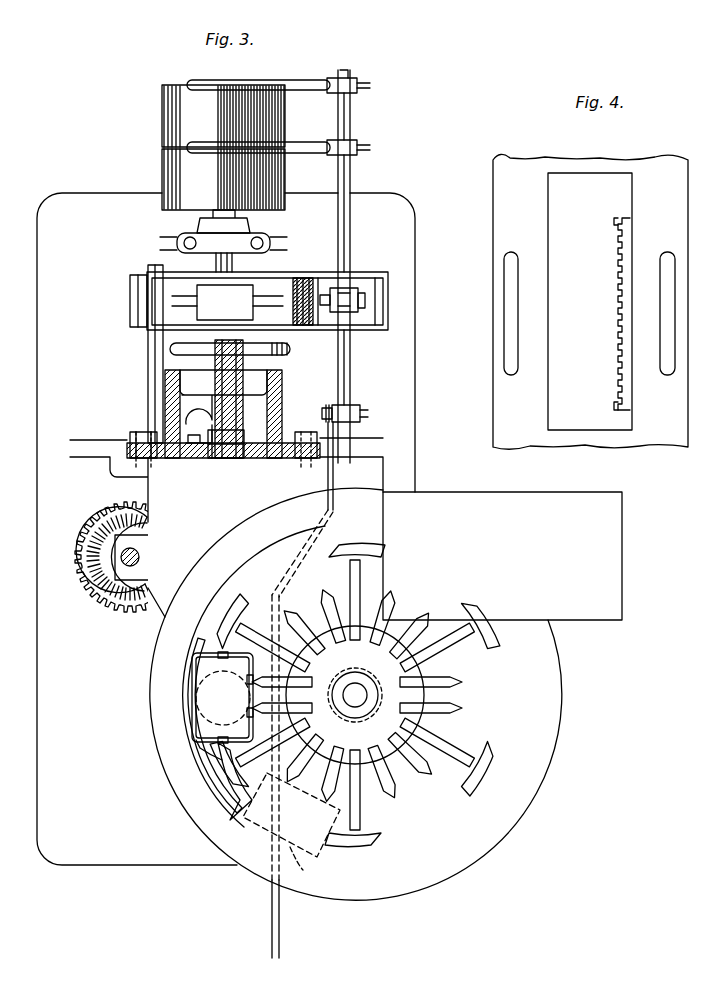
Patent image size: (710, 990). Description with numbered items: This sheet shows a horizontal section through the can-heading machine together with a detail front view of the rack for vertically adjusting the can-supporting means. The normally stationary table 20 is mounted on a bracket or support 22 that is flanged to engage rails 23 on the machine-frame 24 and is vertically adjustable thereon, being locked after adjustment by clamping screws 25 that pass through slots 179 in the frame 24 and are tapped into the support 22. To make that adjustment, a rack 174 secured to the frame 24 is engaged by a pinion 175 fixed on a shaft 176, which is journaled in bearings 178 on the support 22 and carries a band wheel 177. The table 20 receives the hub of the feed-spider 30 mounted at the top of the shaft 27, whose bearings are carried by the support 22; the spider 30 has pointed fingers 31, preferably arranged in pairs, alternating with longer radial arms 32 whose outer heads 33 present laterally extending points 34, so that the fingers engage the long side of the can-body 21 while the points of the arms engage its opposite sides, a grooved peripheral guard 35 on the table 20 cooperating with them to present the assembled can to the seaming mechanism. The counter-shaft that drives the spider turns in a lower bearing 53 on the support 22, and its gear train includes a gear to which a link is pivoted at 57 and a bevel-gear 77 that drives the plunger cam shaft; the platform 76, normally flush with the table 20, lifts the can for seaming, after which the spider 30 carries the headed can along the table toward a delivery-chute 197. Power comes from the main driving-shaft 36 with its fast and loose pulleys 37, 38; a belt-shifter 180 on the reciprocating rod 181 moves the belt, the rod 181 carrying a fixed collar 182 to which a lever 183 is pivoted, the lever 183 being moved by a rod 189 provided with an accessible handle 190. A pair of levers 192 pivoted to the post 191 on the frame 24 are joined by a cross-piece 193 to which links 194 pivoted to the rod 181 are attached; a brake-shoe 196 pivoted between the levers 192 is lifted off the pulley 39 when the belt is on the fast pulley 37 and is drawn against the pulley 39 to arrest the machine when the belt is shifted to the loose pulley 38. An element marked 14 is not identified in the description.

In FIG. 3, the pole piece 14 is at (192, 742).
In FIG. 3, the table 20 is at (356, 694).
In FIG. 3, the can-body 21 is at (291, 830).
In FIG. 3, the support 22 is at (223, 478).
In FIG. 3, the rails 23 is at (166, 458).
In FIG. 3, the machine-frame 24 is at (380, 375).
In FIG. 4, the machine-frame 24 is at (590, 301).
In FIG. 3, the clamping screw 25 is at (145, 436).
In FIG. 3, the shaft 27 is at (368, 697).
In FIG. 3, the feed-spider 30 is at (355, 695).
In FIG. 3, the pointed fingers 31 is at (412, 775).
In FIG. 3, the arms 32 is at (448, 752).
In FIG. 3, the heads 33 is at (486, 766).
In FIG. 3, the points 34 is at (462, 794).
In FIG. 3, the grooved peripheral guard 35 is at (183, 708).
In FIG. 3, the main driving-shaft 36 is at (183, 212).
In FIG. 3, the fast pulley 37 is at (223, 116).
In FIG. 3, the loose pulley 38 is at (223, 179).
In FIG. 3, the pulley 39 is at (130, 306).
In FIG. 3, the lower bearing 53 is at (128, 578).
In FIG. 3, the pivot 57 is at (141, 553).
In FIG. 3, the platform 76 is at (203, 667).
In FIG. 3, the bevel-gear 77 is at (95, 585).
In FIG. 3, the rack 174 is at (261, 452).
In FIG. 4, the rack 174 is at (616, 372).
In FIG. 3, the pinion 175 is at (220, 456).
In FIG. 3, the shaft 176 is at (217, 392).
In FIG. 3, the band wheel 177 is at (291, 349).
In FIG. 3, the bearings 178 is at (233, 428).
In FIG. 4, the slots 179 is at (506, 363).
In FIG. 3, the belt-shifter 180 is at (298, 147).
In FIG. 3, the reciprocating rod 181 is at (351, 178).
In FIG. 3, the fixed collar 182 is at (360, 412).
In FIG. 3, the lever 183 is at (326, 403).
In FIG. 3, the rod 189 is at (335, 478).
In FIG. 3, the handle 190 is at (280, 948).
In FIG. 3, the post 191 is at (148, 362).
In FIG. 3, the levers 192 is at (296, 276).
In FIG. 3, the cross-piece 193 is at (343, 317).
In FIG. 3, the links 194 is at (368, 305).
In FIG. 3, the brake-shoe 196 is at (267, 301).
In FIG. 3, the delivery-chute 197 is at (502, 556).